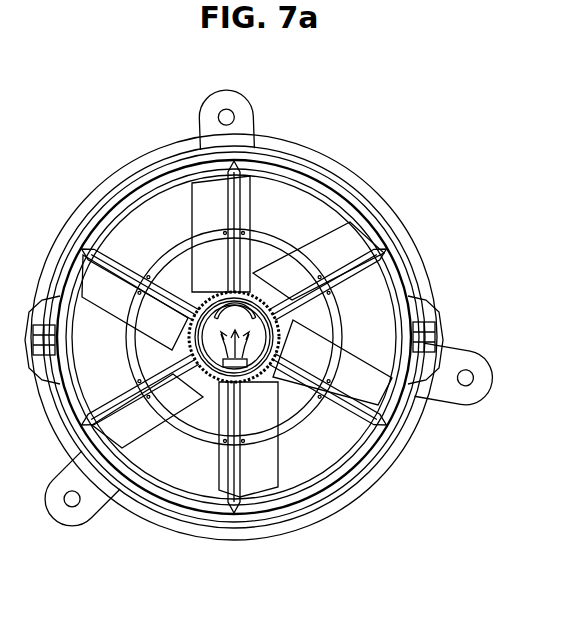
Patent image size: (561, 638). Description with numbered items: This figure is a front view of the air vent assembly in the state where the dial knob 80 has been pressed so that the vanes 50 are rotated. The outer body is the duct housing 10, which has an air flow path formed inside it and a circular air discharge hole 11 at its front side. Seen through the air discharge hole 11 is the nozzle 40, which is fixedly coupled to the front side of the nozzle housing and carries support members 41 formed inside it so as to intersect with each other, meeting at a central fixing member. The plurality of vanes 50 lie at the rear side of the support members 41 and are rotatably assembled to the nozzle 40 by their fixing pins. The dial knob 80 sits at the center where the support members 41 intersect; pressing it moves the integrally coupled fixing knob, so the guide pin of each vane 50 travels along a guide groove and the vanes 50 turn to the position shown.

The duct housing 10 is at (308, 155).
The air discharge hole 11 is at (292, 220).
The nozzle 40 is at (183, 183).
The support members 41 is at (367, 277).
The vanes 50 is at (262, 472).
The dial knob 80 is at (220, 355).